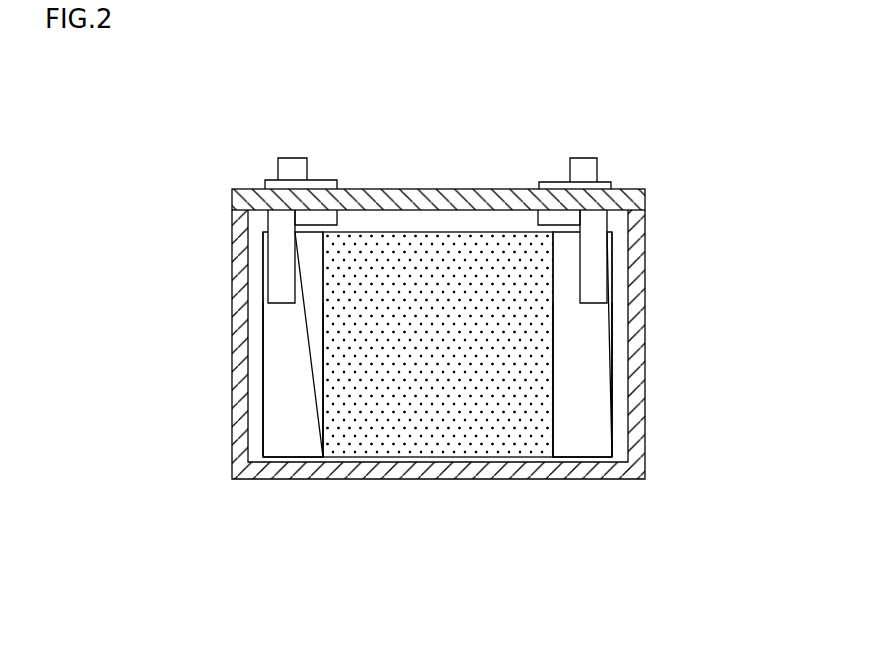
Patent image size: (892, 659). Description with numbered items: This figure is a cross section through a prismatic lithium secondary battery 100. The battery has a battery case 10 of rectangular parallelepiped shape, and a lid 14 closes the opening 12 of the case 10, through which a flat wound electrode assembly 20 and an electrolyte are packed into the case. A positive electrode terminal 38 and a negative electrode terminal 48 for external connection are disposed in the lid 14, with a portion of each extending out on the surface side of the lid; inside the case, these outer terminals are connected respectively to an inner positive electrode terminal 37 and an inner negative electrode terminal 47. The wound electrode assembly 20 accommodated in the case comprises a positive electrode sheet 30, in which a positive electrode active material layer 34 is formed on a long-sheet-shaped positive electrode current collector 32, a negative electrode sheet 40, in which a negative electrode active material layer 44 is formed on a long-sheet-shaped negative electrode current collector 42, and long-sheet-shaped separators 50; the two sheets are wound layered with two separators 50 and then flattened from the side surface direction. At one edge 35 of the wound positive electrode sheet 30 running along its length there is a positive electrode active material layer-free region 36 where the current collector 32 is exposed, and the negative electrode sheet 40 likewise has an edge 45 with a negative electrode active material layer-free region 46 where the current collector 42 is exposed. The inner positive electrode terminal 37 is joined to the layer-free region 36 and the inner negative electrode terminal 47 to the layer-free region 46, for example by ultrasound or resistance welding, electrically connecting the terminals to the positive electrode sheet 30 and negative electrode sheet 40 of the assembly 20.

The lithium secondary battery 100 is at (204, 84).
The battery case 10 is at (645, 375).
The opening 12 is at (418, 226).
The lid 14 is at (377, 189).
The wound electrode assembly 20 is at (458, 231).
The positive electrode sheet 30 is at (276, 328).
The positive electrode current collector 32 is at (290, 447).
The positive electrode active material layer 34 is at (385, 428).
The edge 35 is at (263, 315).
The positive electrode active material layer-free region 36 is at (282, 420).
The inner positive electrode terminal 37 is at (268, 223).
The positive electrode terminal 38 is at (292, 163).
The negative electrode sheet 40 is at (602, 319).
The negative electrode current collector 42 is at (578, 450).
The negative electrode active material layer 44 is at (525, 428).
The negative electrode current collector exposed end 45 is at (612, 317).
The negative electrode active material layer-free region 46 is at (595, 430).
The inner negative electrode terminal 47 is at (595, 226).
The negative electrode terminal 48 is at (585, 160).
The separator 50 is at (457, 447).